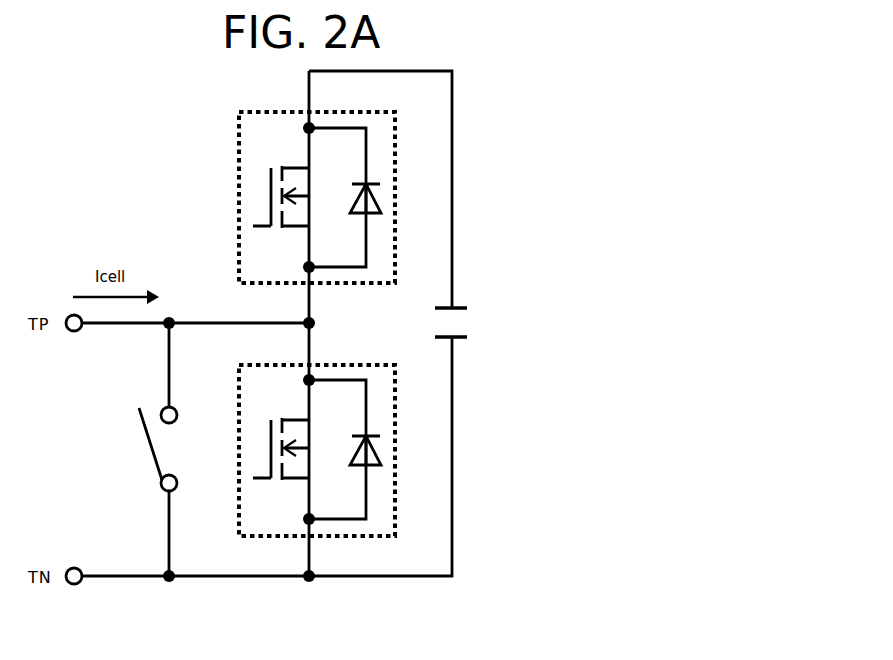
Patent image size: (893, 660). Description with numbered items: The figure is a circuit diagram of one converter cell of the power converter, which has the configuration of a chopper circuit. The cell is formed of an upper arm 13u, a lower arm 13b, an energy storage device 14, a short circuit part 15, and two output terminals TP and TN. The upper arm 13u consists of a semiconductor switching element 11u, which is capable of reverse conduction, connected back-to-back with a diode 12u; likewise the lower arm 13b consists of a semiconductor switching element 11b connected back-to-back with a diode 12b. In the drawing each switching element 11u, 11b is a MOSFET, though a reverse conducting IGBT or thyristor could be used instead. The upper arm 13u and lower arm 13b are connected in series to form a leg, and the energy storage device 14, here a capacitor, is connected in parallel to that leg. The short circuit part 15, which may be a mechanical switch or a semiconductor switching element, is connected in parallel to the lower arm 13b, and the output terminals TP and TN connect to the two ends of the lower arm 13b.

The semiconductor switching element 11u is at (302, 183).
The diode 12u is at (380, 200).
The upper arm 13u is at (357, 179).
The semiconductor switching element 11b is at (300, 464).
The diode 12b is at (380, 452).
The lower arm 13b is at (323, 506).
The energy storage device 14 is at (472, 329).
The short circuit part 15 is at (128, 452).